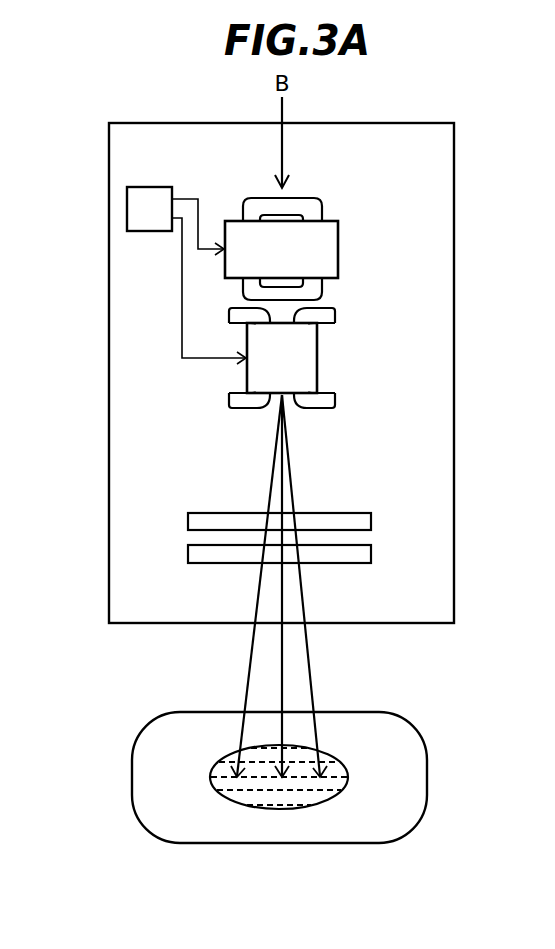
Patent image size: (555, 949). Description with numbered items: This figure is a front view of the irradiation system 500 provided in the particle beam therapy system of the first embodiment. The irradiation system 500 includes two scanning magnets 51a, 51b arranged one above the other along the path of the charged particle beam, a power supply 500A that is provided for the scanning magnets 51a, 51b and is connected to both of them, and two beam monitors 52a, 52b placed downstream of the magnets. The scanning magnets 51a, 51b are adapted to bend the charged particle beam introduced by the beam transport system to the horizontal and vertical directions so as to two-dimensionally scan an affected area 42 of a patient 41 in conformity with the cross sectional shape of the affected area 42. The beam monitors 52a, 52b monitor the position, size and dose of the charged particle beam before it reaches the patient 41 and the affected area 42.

The irradiation system 500 is at (109, 294).
The power supply 500A is at (150, 187).
The scanning magnet 51a is at (338, 249).
The scanning magnet 51b is at (317, 357).
The beam monitor 52a is at (356, 513).
The beam monitor 52b is at (356, 565).
The patient 41 is at (427, 775).
The affected area 42 is at (267, 809).